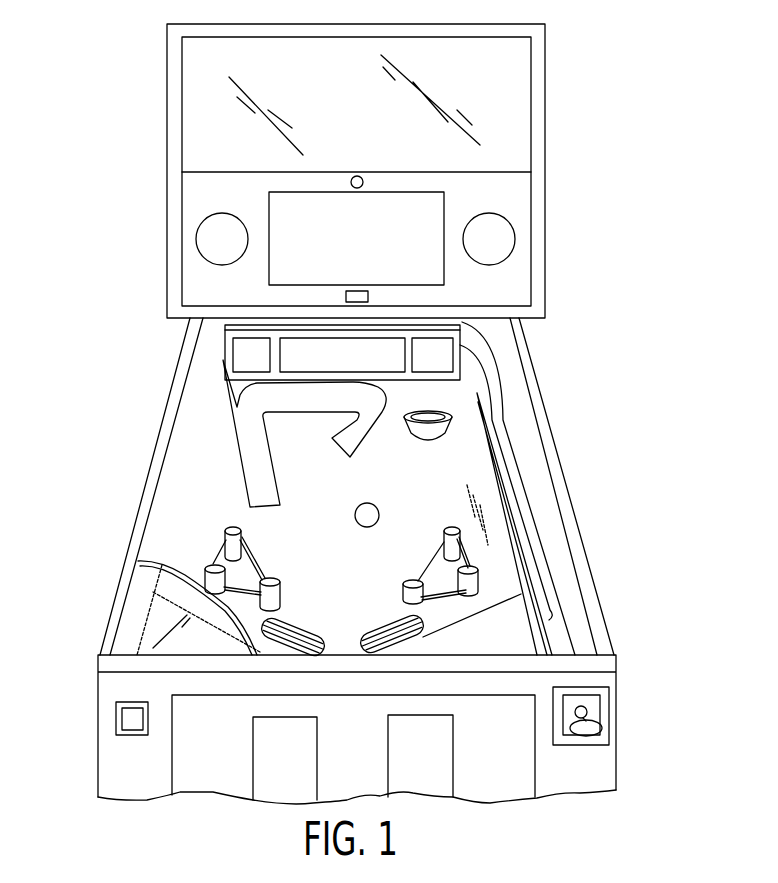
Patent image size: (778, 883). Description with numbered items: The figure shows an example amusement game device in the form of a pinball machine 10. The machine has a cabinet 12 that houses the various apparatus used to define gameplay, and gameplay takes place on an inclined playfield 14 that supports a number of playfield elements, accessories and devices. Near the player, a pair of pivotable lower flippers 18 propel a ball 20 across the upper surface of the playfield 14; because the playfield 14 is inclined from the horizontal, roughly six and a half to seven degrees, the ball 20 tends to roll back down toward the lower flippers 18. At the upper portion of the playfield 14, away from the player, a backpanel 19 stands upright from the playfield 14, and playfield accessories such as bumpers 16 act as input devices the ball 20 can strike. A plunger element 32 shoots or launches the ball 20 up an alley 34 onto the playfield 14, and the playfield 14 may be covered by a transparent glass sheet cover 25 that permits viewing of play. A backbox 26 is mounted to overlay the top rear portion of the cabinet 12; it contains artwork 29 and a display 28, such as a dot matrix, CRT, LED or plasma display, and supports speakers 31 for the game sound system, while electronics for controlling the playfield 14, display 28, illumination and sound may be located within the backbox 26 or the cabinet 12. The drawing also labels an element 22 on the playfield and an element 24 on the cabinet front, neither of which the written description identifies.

The pinball machine 10 is at (620, 535).
The cabinet 12 is at (118, 587).
The playfield 14 is at (203, 495).
The bumpers 16 is at (264, 562).
The lower flippers 18 is at (392, 628).
The backpanel 19 is at (227, 345).
The ball 20 is at (373, 527).
The ramp / lane guide 22 is at (245, 428).
The start button 24 is at (113, 718).
The glass sheet cover 25 is at (130, 633).
The backbox 26 is at (167, 230).
The display 28 is at (415, 238).
The artwork 29 is at (505, 100).
The speakers 31 is at (225, 240).
The plunger element 32 is at (588, 732).
The alley 34 is at (532, 473).